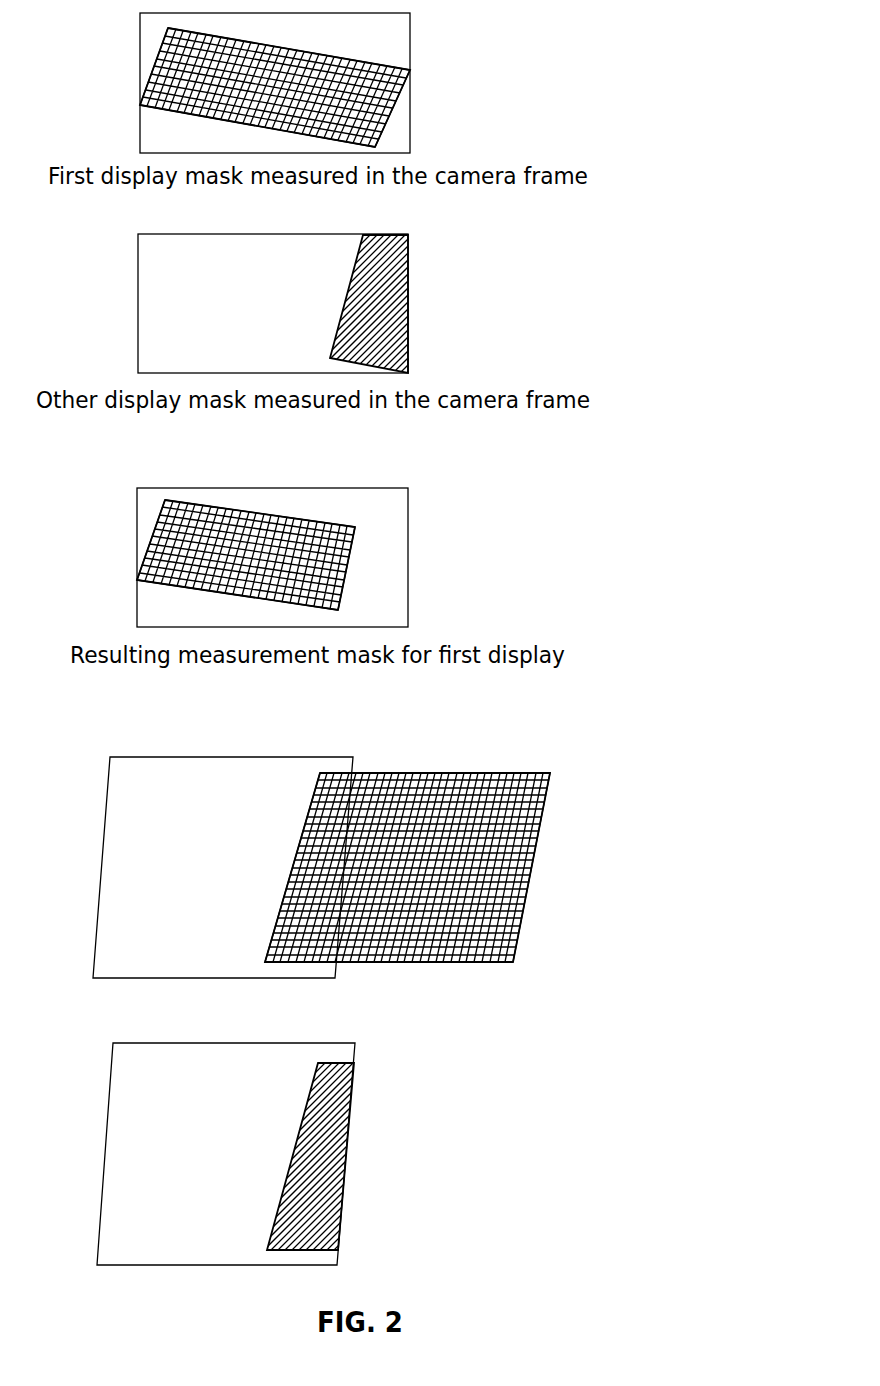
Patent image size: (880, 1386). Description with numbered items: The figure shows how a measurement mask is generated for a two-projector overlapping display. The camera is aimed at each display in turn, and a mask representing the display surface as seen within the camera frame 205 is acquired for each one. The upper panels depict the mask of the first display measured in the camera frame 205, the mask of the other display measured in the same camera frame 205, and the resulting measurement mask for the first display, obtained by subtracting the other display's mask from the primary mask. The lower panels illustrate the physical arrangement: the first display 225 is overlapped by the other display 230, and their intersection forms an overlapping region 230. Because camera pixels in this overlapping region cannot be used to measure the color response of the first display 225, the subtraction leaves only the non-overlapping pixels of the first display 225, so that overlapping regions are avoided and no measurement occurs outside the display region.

The camera frame 205 is at (140, 73).
The first display 225 is at (101, 870).
The other display / overlapping region 230 is at (530, 878).